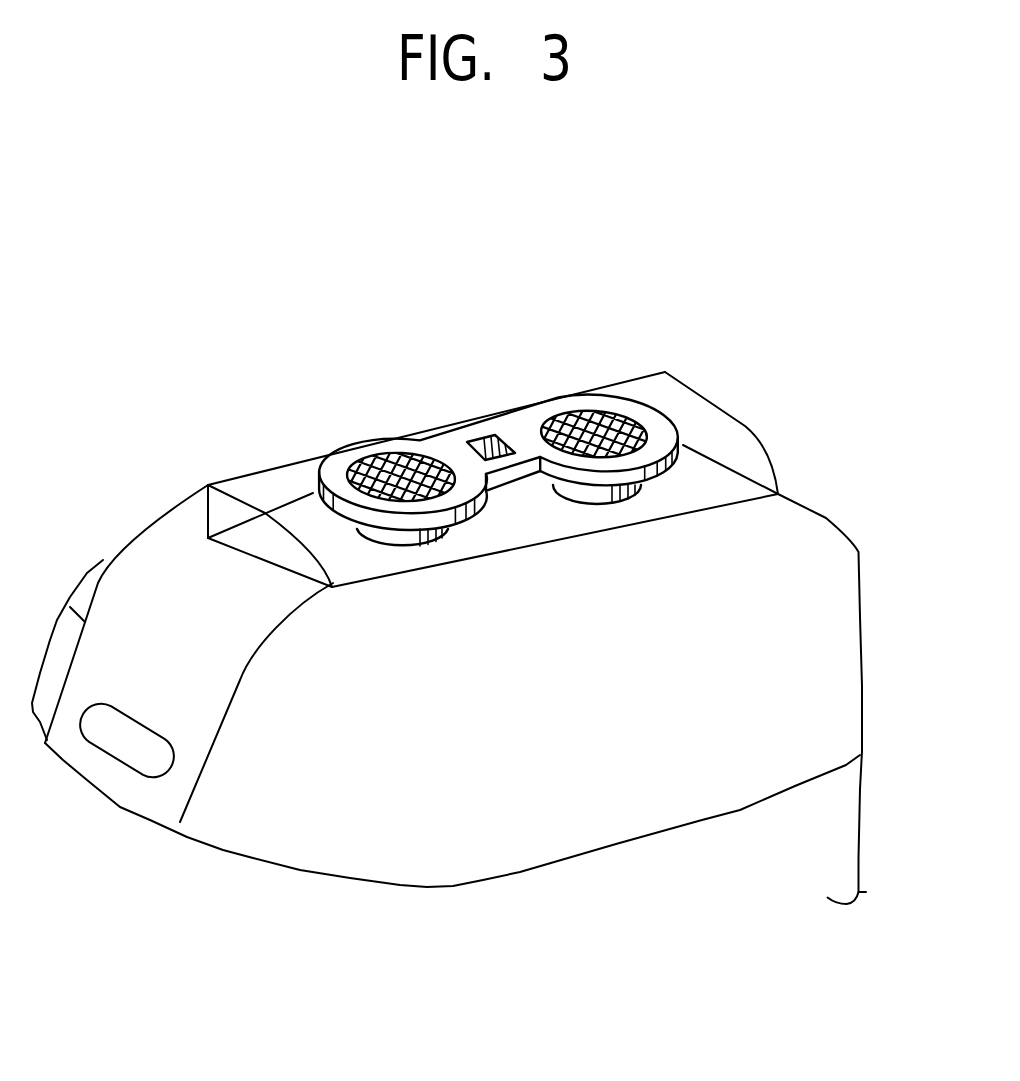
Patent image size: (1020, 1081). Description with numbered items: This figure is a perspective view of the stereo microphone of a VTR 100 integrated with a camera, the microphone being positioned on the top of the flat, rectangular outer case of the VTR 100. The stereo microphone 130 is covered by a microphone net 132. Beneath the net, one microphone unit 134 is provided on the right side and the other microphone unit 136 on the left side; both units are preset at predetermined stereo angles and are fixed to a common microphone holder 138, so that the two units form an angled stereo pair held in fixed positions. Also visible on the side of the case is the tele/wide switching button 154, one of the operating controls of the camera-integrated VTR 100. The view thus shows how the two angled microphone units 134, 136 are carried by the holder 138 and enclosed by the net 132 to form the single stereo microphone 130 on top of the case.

The VTR integrated with a camera 100 is at (497, 358).
The stereo microphone 130 is at (272, 448).
The microphone net 132 is at (738, 417).
The microphone unit 134 is at (392, 458).
The microphone unit 136 is at (610, 410).
The microphone holder 138 is at (518, 415).
The tele/wide switching button 154 is at (123, 745).